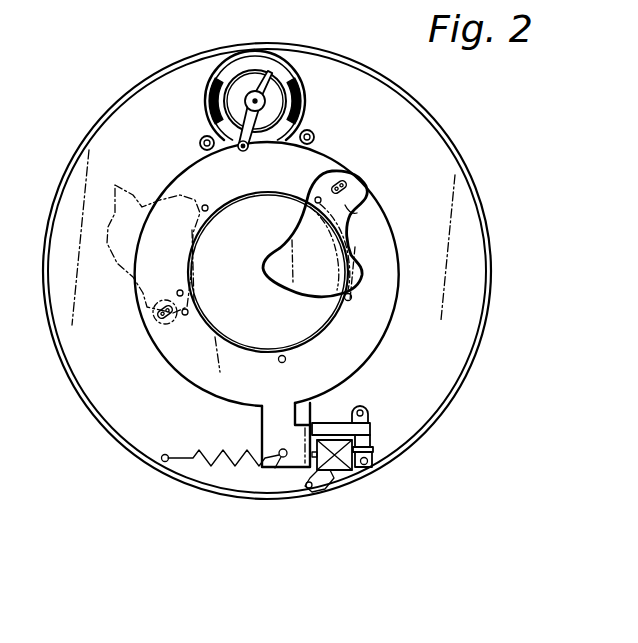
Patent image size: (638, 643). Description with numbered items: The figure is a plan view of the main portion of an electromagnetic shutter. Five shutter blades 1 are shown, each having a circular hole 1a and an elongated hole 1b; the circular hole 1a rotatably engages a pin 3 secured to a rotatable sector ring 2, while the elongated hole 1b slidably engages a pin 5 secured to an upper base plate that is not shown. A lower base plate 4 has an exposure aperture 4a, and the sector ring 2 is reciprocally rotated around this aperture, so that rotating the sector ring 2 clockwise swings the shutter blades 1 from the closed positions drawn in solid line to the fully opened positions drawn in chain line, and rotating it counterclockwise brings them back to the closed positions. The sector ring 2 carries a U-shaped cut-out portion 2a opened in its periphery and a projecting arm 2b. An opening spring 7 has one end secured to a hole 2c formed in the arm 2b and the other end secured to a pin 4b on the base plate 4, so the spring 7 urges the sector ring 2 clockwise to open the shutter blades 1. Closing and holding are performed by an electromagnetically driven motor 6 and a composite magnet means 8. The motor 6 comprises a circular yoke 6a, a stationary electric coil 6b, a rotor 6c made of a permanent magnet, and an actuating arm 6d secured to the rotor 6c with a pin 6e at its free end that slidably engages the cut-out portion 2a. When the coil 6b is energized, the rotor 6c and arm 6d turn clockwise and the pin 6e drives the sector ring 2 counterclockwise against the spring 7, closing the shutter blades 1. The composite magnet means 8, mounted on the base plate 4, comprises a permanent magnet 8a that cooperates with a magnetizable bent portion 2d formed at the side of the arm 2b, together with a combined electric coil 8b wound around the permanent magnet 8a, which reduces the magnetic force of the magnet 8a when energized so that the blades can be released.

The shutter blade 1 is at (365, 270).
The circular hole 1a is at (355, 213).
The elongated hole 1b is at (347, 189).
The sector ring 2 is at (388, 327).
The U-shaped cut-out portion 2a is at (245, 152).
The projecting arm 2b is at (295, 462).
The hole 2c is at (282, 462).
The magnetizable bent portion 2d is at (310, 403).
The pin 3 is at (315, 203).
The lower base plate 4 is at (100, 110).
The exposure aperture 4a is at (233, 335).
The pin 4b is at (160, 456).
The pin 5 is at (340, 181).
The electromagnetically driven motor 6 is at (217, 104).
The circular yoke 6a is at (220, 63).
The stationary electric coil 6b is at (207, 97).
The rotor 6c is at (233, 110).
The actuating arm 6d is at (273, 125).
The pin 6e is at (238, 148).
The opening spring 7 is at (230, 467).
The composite magnet means 8 is at (369, 448).
The permanent magnet 8a is at (343, 422).
The combined electric coil 8b is at (337, 488).